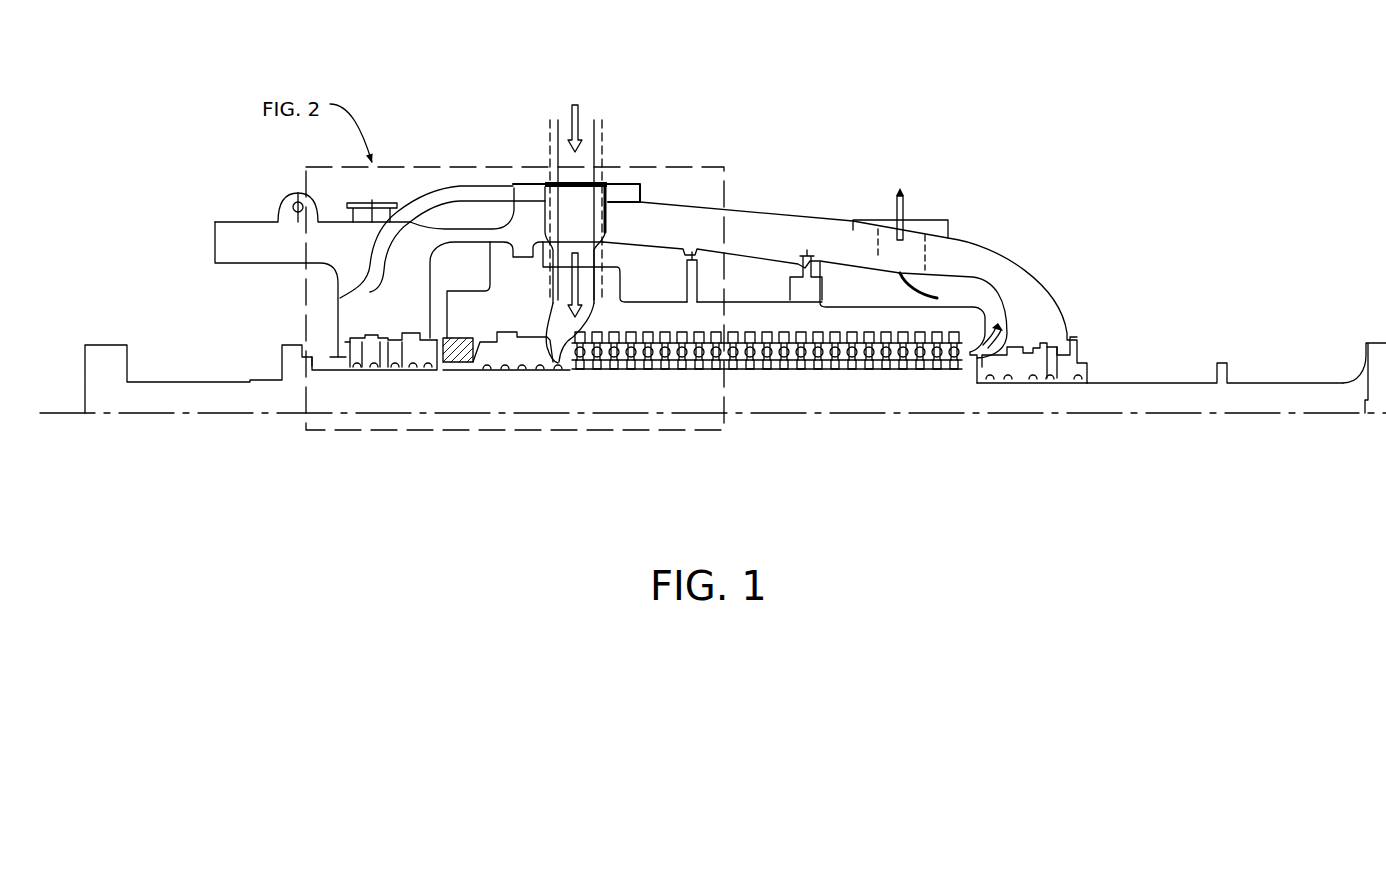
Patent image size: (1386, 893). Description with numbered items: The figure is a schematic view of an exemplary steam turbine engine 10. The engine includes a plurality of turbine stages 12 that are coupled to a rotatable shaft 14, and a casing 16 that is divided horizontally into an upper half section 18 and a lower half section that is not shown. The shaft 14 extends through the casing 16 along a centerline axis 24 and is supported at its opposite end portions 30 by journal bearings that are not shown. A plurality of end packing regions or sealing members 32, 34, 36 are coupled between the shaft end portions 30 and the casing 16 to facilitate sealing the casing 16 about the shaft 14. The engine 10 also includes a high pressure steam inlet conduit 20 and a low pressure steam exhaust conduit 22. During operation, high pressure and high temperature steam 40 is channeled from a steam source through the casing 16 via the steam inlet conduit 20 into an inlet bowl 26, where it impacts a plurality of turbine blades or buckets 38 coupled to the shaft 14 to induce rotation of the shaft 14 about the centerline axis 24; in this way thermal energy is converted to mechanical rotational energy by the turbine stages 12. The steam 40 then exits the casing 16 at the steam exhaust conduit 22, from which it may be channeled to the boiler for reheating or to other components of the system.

The steam turbine engine 10 is at (932, 62).
The turbine stages 12 is at (683, 378).
The rotatable shaft 14 is at (1268, 380).
The casing 16 is at (1036, 255).
The upper half section 18 is at (1062, 297).
The high pressure steam inlet conduit 20 is at (608, 185).
The low pressure steam exhaust conduit 22 is at (922, 215).
The centerline axis 24 is at (1308, 415).
The inlet bowl 26 is at (557, 378).
The end portions 30 is at (155, 378).
The sealing member 32 is at (390, 378).
The sealing member 34 is at (520, 378).
The sealing member 36 is at (1022, 392).
The turbine blades or buckets 38 is at (735, 372).
The steam 40 is at (580, 110).